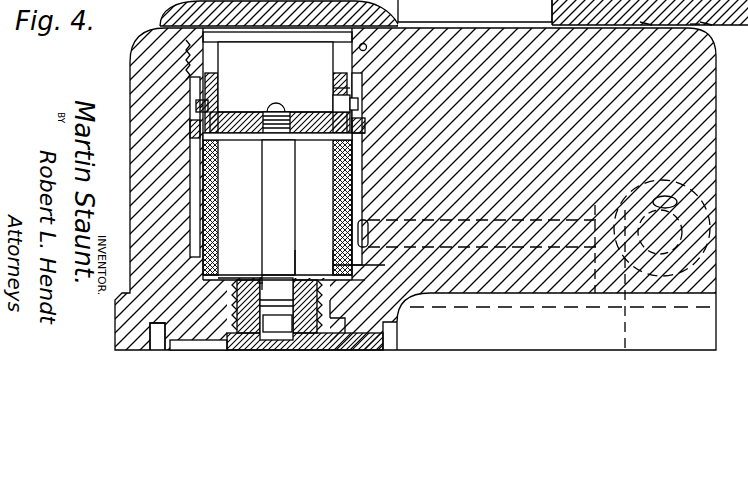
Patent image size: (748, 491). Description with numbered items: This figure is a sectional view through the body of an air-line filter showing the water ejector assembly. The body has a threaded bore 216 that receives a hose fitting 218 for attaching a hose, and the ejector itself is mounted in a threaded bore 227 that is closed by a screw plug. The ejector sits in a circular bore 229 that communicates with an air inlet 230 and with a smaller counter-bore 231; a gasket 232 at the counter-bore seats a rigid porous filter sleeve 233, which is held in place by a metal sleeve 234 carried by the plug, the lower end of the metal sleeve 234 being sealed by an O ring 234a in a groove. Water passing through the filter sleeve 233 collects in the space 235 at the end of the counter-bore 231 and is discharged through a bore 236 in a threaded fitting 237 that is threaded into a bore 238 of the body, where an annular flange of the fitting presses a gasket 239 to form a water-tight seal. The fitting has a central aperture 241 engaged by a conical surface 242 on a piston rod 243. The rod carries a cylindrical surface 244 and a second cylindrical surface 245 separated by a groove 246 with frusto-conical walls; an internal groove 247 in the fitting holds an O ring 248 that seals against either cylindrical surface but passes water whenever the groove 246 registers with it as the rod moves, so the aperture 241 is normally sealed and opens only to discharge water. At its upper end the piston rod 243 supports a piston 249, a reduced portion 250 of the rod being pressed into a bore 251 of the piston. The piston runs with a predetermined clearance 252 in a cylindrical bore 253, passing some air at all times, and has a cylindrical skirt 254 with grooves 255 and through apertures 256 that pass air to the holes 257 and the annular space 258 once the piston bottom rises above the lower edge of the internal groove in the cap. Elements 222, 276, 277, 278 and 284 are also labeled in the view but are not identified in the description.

The threaded bore 216 is at (690, 200).
The hose fitting 218 is at (660, 232).
The chamber 222 is at (356, 13).
The threaded bore 227 is at (368, 47).
The circular bore 229 is at (362, 192).
The air inlet 230 is at (478, 222).
The counter-bore 231 is at (386, 266).
The gasket 232 is at (355, 284).
The rigid porous filter sleeve 233 is at (356, 172).
The metal sleeve 234 is at (354, 122).
The O ring 234a is at (363, 132).
The space 235 is at (320, 275).
The bore 236 is at (334, 310).
The threaded fitting 237 is at (233, 329).
The bore 238 is at (238, 290).
The gasket 239 is at (332, 324).
The central aperture 241 is at (330, 340).
The conical surface 242 is at (276, 309).
The piston rod 243 is at (294, 213).
The cylindrical surface 244 is at (301, 274).
The second cylindrical surface 245 is at (216, 333).
The groove 246 is at (280, 305).
The internal groove 247 is at (255, 280).
The O ring 248 is at (235, 280).
The piston 249 is at (186, 165).
The reduced portion 250 is at (283, 108).
The bore 251 is at (276, 140).
The clearance 252 is at (190, 130).
The cylindrical bore 253 is at (196, 108).
The cylindrical skirt 254 is at (348, 93).
The grooves 255 is at (353, 104).
The through apertures 256 is at (348, 101).
The holes 257 is at (186, 82).
The annular space 258 is at (190, 95).
The plate 276 is at (653, 12).
The plate 277 is at (694, 12).
The plate 278 is at (650, 12).
The plate opening 284 is at (683, 19).